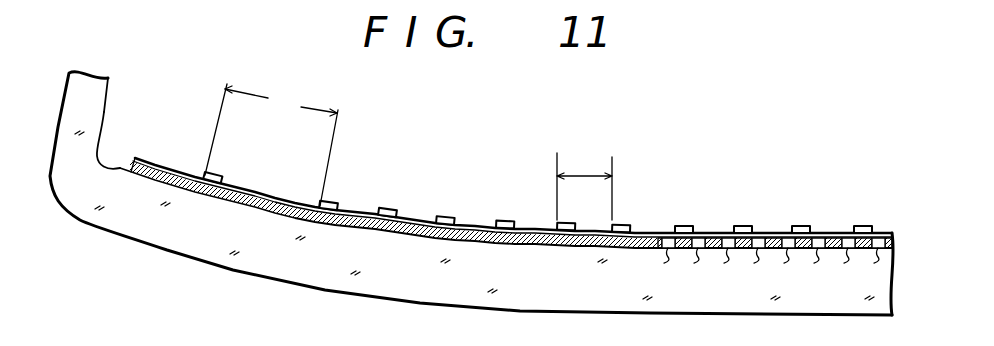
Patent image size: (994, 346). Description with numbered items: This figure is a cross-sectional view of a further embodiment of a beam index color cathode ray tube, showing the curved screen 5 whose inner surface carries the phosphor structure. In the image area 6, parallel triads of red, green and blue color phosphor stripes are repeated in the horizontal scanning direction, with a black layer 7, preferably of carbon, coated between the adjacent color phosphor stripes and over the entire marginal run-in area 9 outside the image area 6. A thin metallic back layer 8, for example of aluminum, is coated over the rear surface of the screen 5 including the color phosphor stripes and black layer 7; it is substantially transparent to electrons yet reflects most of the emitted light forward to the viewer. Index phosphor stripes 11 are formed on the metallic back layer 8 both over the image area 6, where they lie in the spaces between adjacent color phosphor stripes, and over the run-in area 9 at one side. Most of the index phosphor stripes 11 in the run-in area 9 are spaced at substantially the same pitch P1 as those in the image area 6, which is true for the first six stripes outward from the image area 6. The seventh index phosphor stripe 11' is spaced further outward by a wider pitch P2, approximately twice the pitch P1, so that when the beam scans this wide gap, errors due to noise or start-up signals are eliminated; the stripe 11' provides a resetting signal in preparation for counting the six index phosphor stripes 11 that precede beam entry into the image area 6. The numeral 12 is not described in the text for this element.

The screen 5 is at (128, 231).
The image area 6 is at (787, 190).
The black layer 7 is at (355, 216).
The metallic back layer 8 is at (537, 224).
The run-in area 9 is at (490, 181).
The index phosphor stripes 11 is at (595, 188).
The seventh index phosphor stripe 11' is at (234, 151).
The phosphor / hatched layer 12 is at (276, 192).
The pitch P1 is at (581, 176).
The wider pitch P2 is at (271, 141).